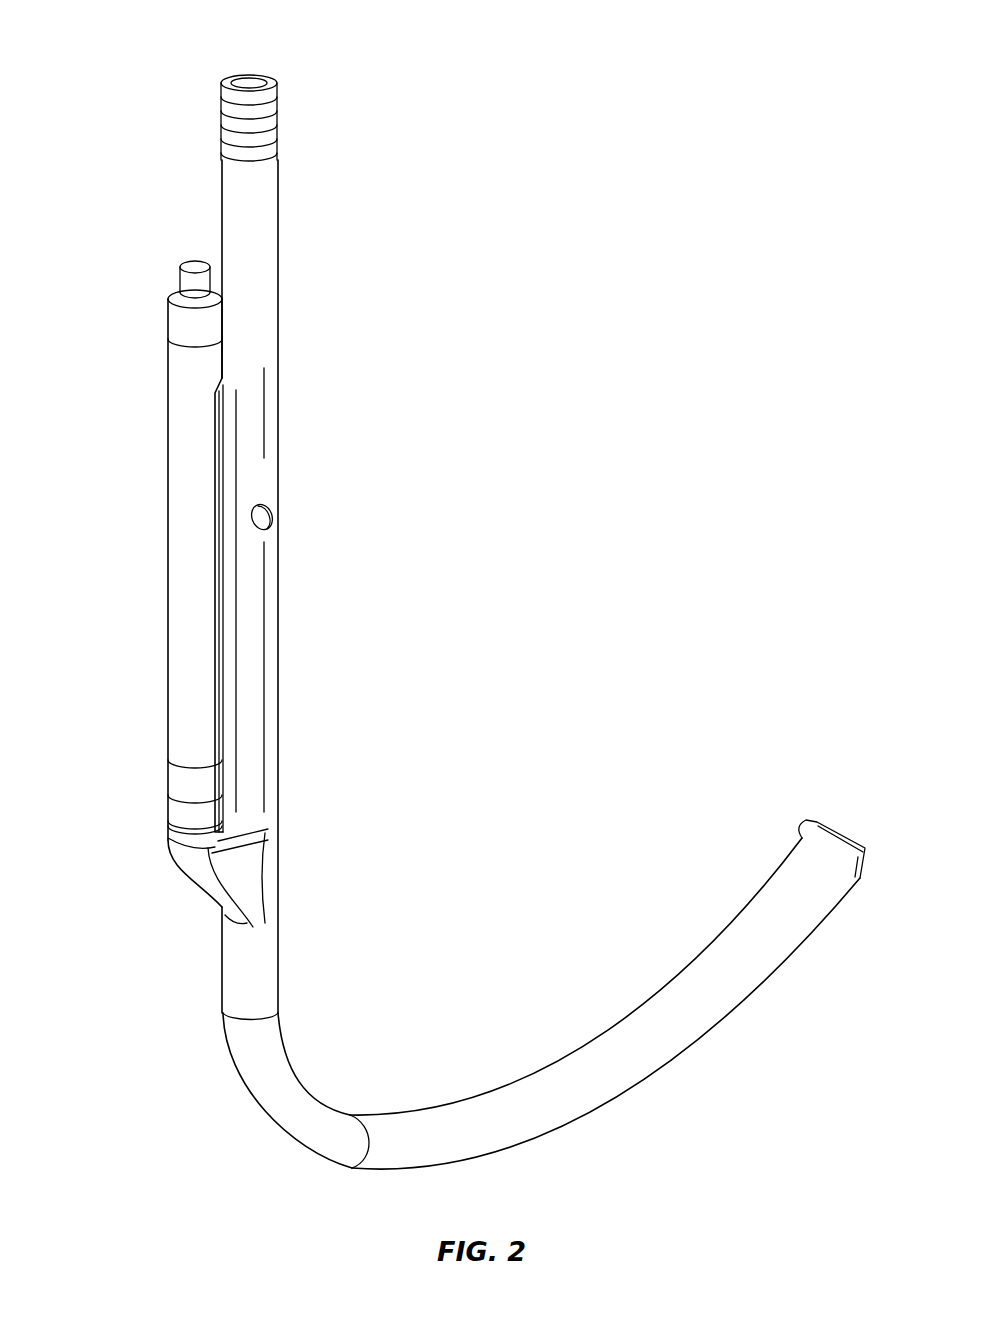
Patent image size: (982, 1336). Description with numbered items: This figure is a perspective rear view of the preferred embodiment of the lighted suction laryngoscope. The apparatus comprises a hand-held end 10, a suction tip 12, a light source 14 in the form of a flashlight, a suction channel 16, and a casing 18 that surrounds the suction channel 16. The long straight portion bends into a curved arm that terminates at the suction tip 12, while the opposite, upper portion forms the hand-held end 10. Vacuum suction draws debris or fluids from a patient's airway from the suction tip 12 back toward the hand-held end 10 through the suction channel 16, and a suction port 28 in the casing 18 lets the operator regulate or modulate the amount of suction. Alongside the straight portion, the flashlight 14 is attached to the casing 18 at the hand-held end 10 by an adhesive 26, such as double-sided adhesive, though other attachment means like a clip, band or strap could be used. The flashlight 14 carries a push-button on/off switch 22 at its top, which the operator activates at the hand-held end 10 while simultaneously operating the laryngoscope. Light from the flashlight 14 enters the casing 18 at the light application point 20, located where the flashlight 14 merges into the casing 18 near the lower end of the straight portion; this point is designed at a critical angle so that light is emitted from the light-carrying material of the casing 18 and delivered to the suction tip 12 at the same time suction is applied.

The hand-held end 10 is at (128, 44).
The suction tip 12 is at (838, 828).
The light source 14 is at (168, 503).
The suction channel 16 is at (733, 998).
The casing 18 is at (585, 1045).
The light application point 20 is at (203, 878).
The push-button on/off switch 22 is at (197, 262).
The adhesive 26 is at (215, 452).
The suction port 28 is at (263, 513).